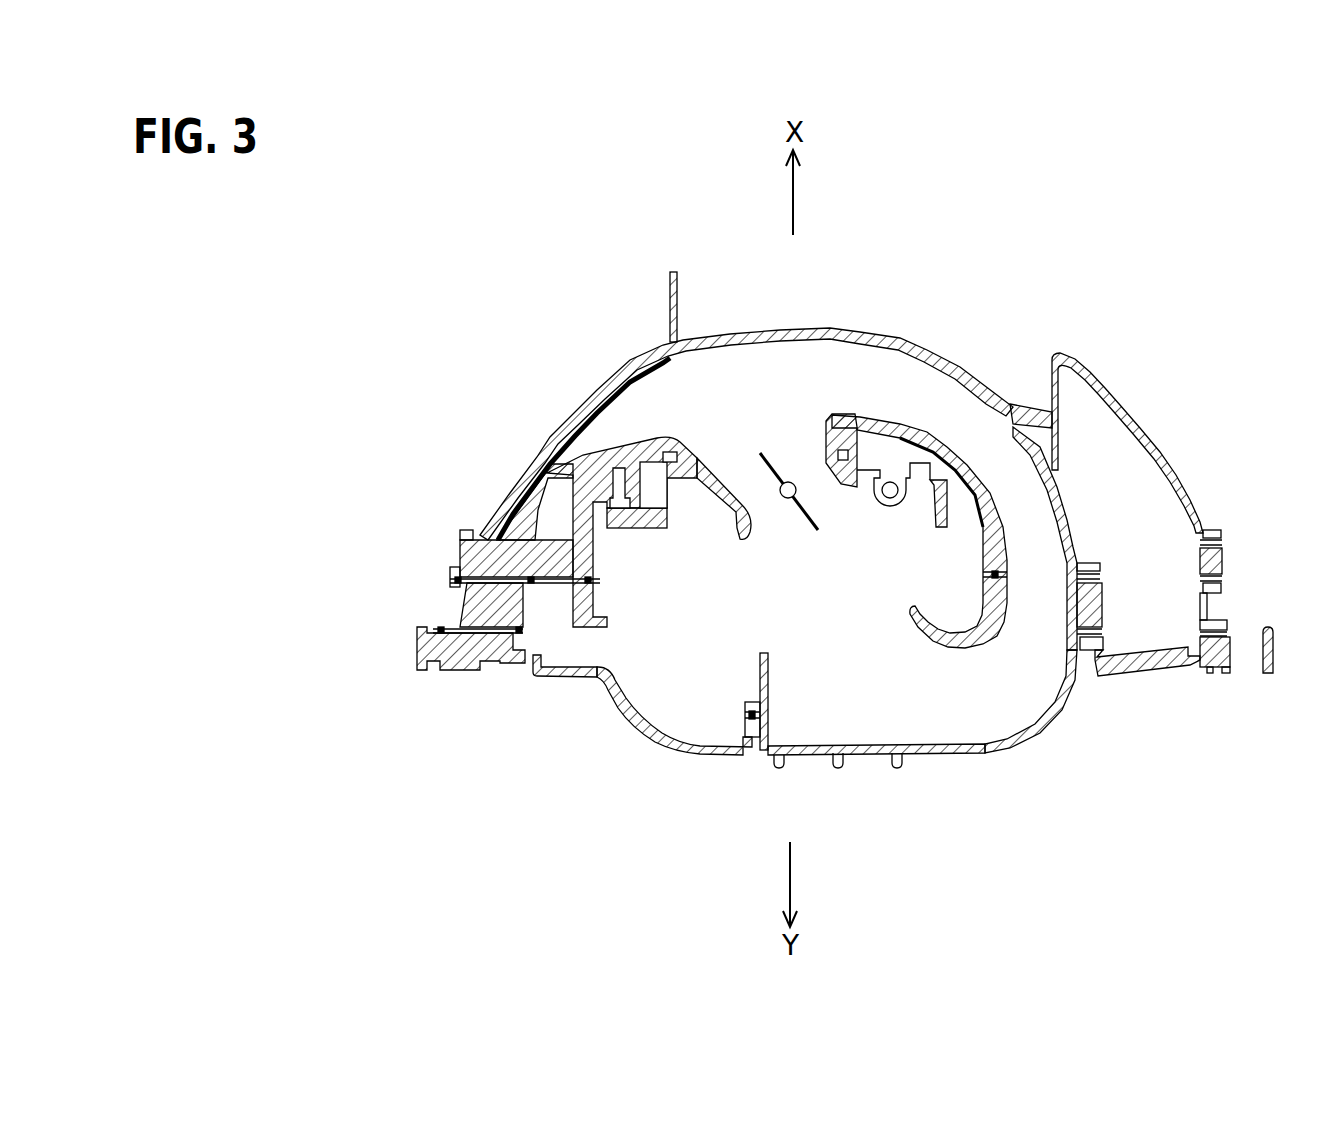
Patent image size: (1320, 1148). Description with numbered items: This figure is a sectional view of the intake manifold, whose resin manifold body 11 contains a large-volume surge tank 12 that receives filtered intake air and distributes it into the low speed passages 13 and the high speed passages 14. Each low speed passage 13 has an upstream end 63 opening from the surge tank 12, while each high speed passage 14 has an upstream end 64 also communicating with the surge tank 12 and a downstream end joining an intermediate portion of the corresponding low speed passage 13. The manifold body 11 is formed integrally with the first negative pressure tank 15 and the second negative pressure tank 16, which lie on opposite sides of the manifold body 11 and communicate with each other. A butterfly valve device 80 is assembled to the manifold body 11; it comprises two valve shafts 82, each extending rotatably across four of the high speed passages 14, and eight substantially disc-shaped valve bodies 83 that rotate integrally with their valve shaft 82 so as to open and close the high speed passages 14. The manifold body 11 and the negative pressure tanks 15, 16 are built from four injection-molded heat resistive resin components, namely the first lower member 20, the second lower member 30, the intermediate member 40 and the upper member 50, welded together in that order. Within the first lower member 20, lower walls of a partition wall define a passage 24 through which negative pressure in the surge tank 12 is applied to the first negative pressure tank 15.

The manifold body 11 is at (331, 483).
The surge tank 12 is at (840, 720).
The low speed passages 13 is at (1039, 602).
The high speed passages 14 is at (736, 452).
The first negative pressure tank 15 is at (1152, 455).
The second negative pressure tank 16 is at (556, 512).
The first lower member 20 is at (420, 650).
The passage 24 is at (550, 638).
The second lower member 30 is at (467, 601).
The intermediate member 40 is at (460, 553).
The upper member 50 is at (500, 494).
The upstream end 63 is at (957, 700).
The upstream end 64 is at (764, 505).
The butterfly valve device 80 is at (934, 478).
The valve shaft 82 is at (892, 480).
The valve body 83 is at (798, 516).